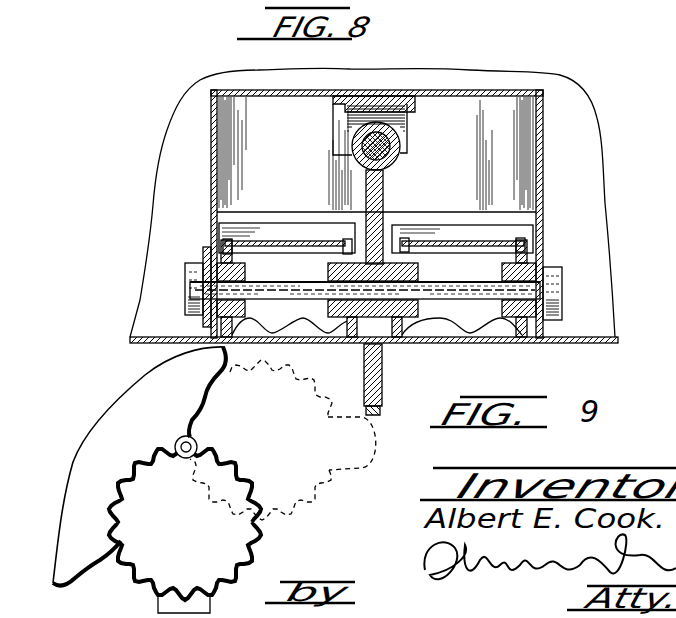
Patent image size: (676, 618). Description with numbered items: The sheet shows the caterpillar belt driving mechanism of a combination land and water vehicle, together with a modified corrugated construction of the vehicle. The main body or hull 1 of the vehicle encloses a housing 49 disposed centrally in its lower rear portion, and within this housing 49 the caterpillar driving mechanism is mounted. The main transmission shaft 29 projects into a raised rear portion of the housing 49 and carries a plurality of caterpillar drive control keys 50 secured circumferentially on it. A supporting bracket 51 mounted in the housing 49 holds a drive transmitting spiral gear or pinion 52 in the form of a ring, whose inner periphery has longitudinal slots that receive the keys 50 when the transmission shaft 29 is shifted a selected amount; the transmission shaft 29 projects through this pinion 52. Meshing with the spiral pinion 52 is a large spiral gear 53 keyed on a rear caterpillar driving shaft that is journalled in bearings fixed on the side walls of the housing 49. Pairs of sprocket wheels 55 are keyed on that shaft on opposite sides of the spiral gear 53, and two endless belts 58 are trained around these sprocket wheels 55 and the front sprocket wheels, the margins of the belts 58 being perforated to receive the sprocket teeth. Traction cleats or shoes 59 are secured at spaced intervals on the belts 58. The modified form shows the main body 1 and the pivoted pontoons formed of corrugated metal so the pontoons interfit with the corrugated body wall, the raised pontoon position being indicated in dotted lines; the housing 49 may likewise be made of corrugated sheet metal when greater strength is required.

The main body or hull 1 is at (637, 215).
The main transmission shaft 29 is at (386, 145).
The housing 49 is at (211, 126).
The caterpillar drive control keys 50 is at (358, 143).
The supporting bracket 51 is at (398, 95).
The drive transmitting spiral gear or pinion 52 is at (357, 130).
The large spiral gear 53 is at (372, 198).
The sprocket wheels 55 is at (327, 263).
The endless belts 58 is at (455, 347).
The traction cleats or shoes 59 is at (447, 234).